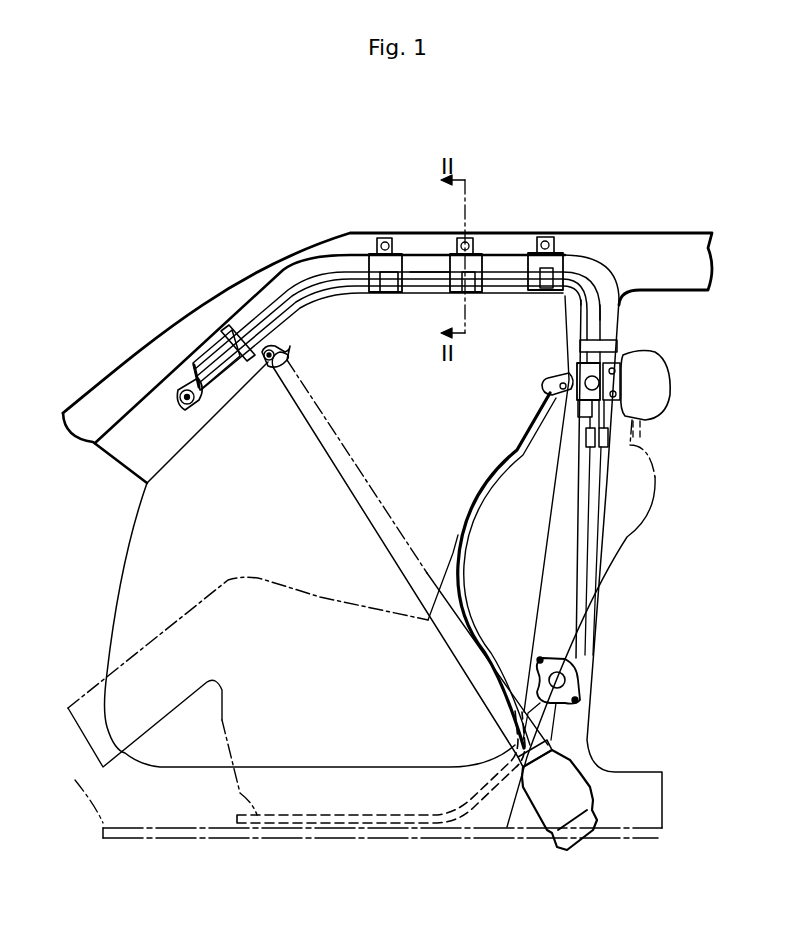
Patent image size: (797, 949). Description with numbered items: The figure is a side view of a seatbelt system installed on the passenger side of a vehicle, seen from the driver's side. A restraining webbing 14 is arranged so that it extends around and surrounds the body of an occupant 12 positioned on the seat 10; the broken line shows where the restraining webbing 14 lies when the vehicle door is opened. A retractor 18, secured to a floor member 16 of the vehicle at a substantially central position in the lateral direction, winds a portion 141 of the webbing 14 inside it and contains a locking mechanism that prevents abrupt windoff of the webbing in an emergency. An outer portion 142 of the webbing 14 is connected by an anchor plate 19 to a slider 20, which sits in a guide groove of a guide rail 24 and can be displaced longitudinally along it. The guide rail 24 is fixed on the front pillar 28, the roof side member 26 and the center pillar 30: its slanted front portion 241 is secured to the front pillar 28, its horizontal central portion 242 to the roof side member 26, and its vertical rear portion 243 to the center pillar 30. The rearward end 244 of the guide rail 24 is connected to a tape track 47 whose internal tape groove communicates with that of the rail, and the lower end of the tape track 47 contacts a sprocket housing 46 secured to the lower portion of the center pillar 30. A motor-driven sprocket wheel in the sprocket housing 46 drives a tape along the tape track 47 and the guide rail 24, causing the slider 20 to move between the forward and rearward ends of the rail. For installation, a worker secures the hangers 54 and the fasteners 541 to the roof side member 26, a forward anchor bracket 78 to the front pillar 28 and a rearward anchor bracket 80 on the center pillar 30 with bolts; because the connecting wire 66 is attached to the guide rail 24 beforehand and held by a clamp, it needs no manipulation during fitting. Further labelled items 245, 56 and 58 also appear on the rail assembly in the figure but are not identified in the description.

The seat 10 is at (637, 548).
The occupant 12 is at (277, 582).
The restraining webbing 14 is at (362, 470).
The portion of the webbing 141 is at (507, 717).
The outer portion of the webbing 142 is at (540, 420).
The floor member 16 is at (617, 837).
The retractor 18 is at (575, 780).
The anchor plate 19 is at (548, 380).
The slider 20 is at (577, 372).
The guide rail 24 is at (505, 258).
The slanted front portion of the guide rail 241 is at (213, 352).
The horizontal central portion of the guide rail 242 is at (428, 258).
The vertical rear portion of the guide rail 243 is at (607, 308).
The rearward end of the guide rail 244 is at (610, 416).
The rail stopper 245 is at (190, 367).
The roof side member 26 is at (405, 256).
The front pillar 28 is at (233, 388).
The center pillar 30 is at (557, 512).
The sprocket housing 46 is at (572, 681).
The tape track 47 is at (587, 574).
The hangers 54 is at (559, 241).
The fasteners 541 is at (228, 328).
The clip 56 is at (390, 295).
The front bracket 58 is at (378, 238).
The connecting wire 66 is at (595, 280).
The forward anchor bracket 78 is at (175, 395).
The rearward anchor bracket 80 is at (620, 387).